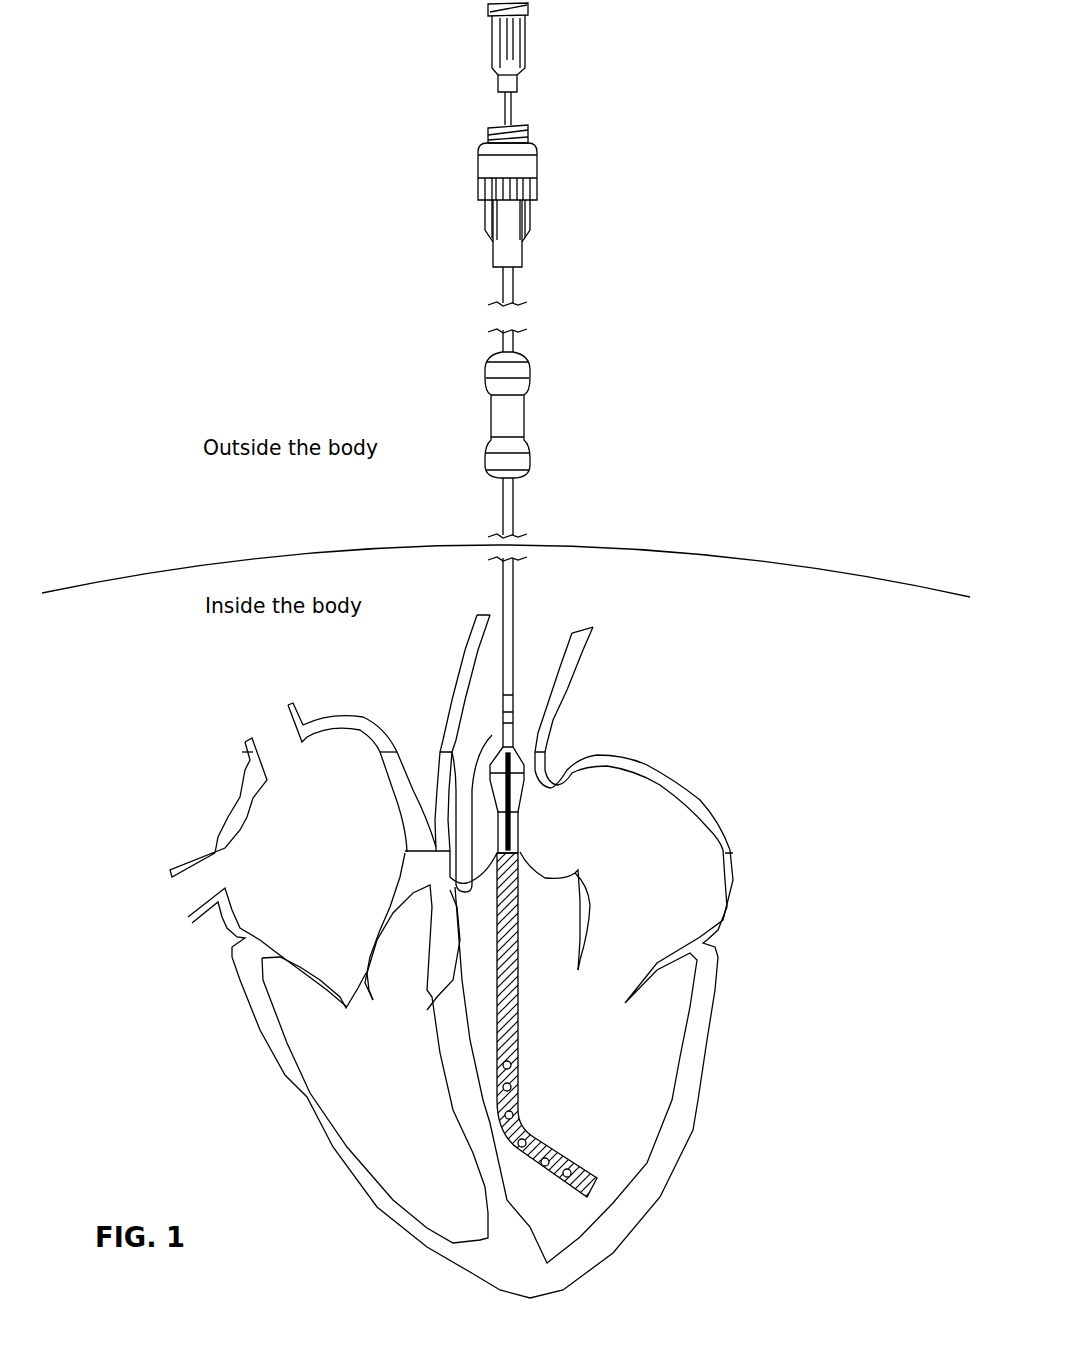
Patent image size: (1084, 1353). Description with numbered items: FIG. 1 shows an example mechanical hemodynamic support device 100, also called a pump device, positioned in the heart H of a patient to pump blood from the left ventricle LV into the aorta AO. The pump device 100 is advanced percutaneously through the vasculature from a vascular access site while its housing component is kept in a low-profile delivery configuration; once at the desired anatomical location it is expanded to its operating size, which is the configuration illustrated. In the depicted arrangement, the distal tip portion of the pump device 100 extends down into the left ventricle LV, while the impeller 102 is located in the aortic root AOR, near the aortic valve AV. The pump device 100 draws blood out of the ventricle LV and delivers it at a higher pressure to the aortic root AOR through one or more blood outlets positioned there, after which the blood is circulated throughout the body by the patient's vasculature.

The mechanical hemodynamic support device 100 is at (548, 843).
The impeller 102 is at (525, 785).
The heart H is at (242, 812).
The aorta AO is at (523, 687).
The aortic root AOR is at (433, 843).
The aortic valve AV is at (473, 890).
The left ventricle LV is at (565, 1164).